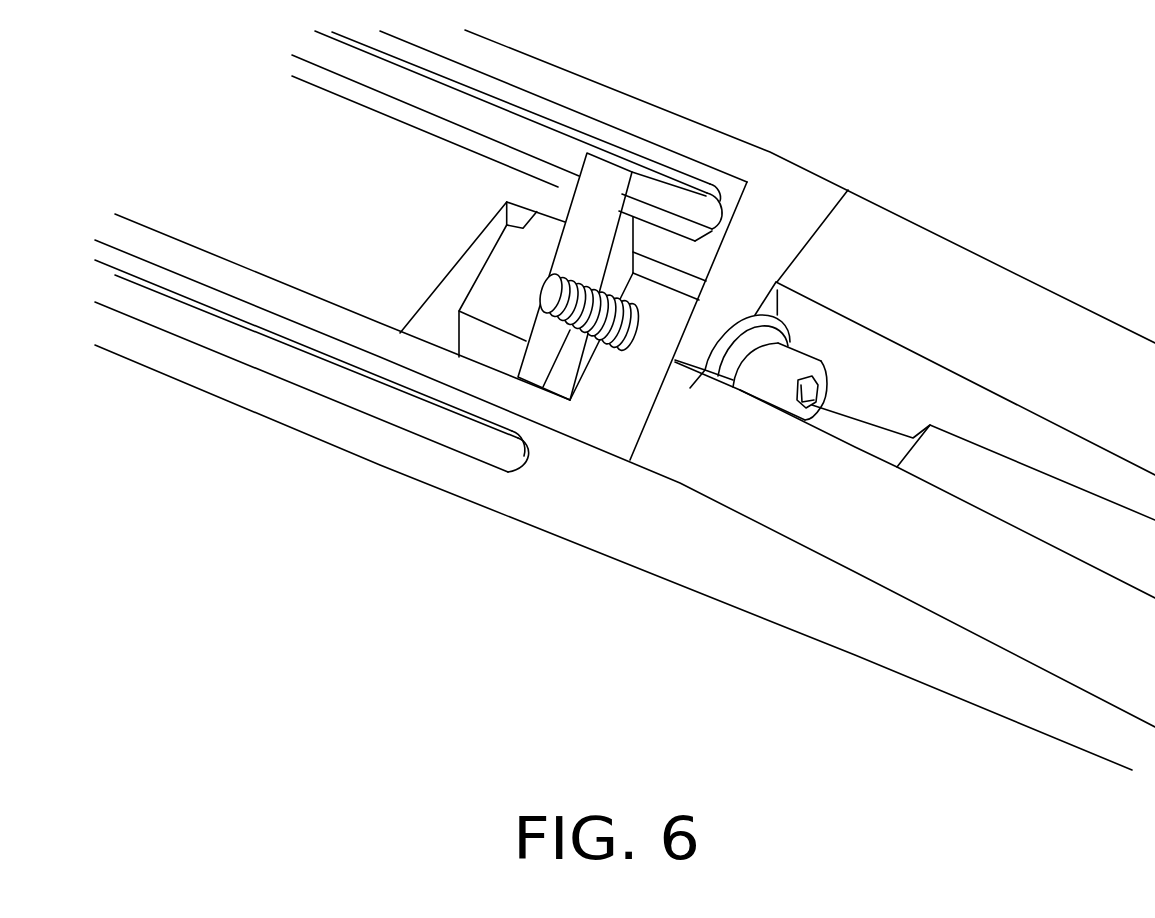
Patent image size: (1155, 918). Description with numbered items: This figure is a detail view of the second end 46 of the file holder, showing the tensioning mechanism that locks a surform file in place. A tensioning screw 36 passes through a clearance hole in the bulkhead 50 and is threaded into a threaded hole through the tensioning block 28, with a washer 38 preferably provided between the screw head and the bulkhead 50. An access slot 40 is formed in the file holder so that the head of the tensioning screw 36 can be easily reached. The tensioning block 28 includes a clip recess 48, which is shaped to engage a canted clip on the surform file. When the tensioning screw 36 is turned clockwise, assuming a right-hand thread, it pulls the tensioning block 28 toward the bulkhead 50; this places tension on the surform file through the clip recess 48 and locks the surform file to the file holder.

The tensioning block 28 is at (505, 283).
The tensioning screw 36 is at (703, 210).
The washer 38 is at (797, 293).
The access slot 40 is at (868, 377).
The second end 46 is at (690, 537).
The clip recess 48 is at (539, 298).
The bulkhead 50 is at (657, 367).